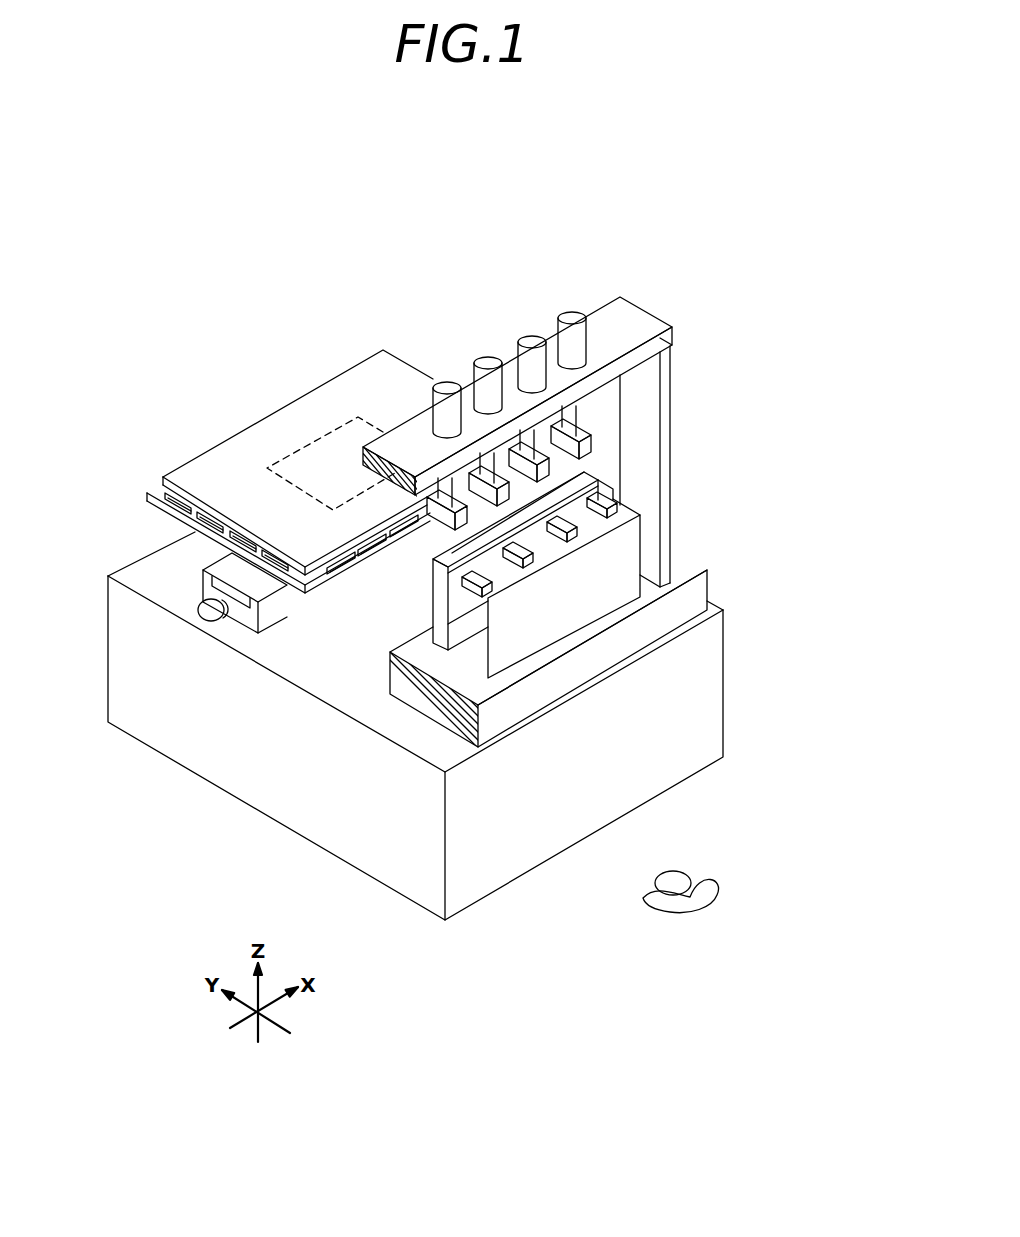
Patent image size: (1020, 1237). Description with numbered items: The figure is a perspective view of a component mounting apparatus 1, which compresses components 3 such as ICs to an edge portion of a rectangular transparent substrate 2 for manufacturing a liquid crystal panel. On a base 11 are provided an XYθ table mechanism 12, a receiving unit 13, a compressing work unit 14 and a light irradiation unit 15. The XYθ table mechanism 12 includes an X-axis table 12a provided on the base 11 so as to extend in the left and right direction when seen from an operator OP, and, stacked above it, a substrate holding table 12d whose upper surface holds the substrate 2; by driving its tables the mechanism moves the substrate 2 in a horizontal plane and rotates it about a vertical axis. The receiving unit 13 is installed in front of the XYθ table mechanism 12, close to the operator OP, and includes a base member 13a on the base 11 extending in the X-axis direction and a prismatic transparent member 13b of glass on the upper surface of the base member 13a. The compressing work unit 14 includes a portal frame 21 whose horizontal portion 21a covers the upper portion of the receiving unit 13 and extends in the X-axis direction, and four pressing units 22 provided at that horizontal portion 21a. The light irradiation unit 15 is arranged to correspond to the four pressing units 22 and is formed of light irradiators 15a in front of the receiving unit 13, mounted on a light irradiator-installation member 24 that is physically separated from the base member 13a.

The component mounting apparatus 1 is at (266, 205).
The transparent substrate 2 is at (298, 449).
The components 3 is at (212, 510).
The base 11 is at (713, 670).
The XYθ table mechanism 12 is at (242, 601).
The X-axis table 12a is at (244, 620).
The substrate holding table 12d is at (303, 453).
The receiving unit 13 is at (476, 696).
The base member 13a is at (462, 633).
The transparent member 13b is at (432, 546).
The compressing work unit 14 is at (510, 373).
The light irradiation unit 15 is at (628, 500).
The light irradiator 15a is at (532, 560).
The portal frame 21 is at (673, 415).
The horizontal portion 21a is at (637, 310).
The pressing unit 22 is at (533, 330).
The light irradiator-installation member 24 is at (632, 538).
The operator OP is at (702, 900).